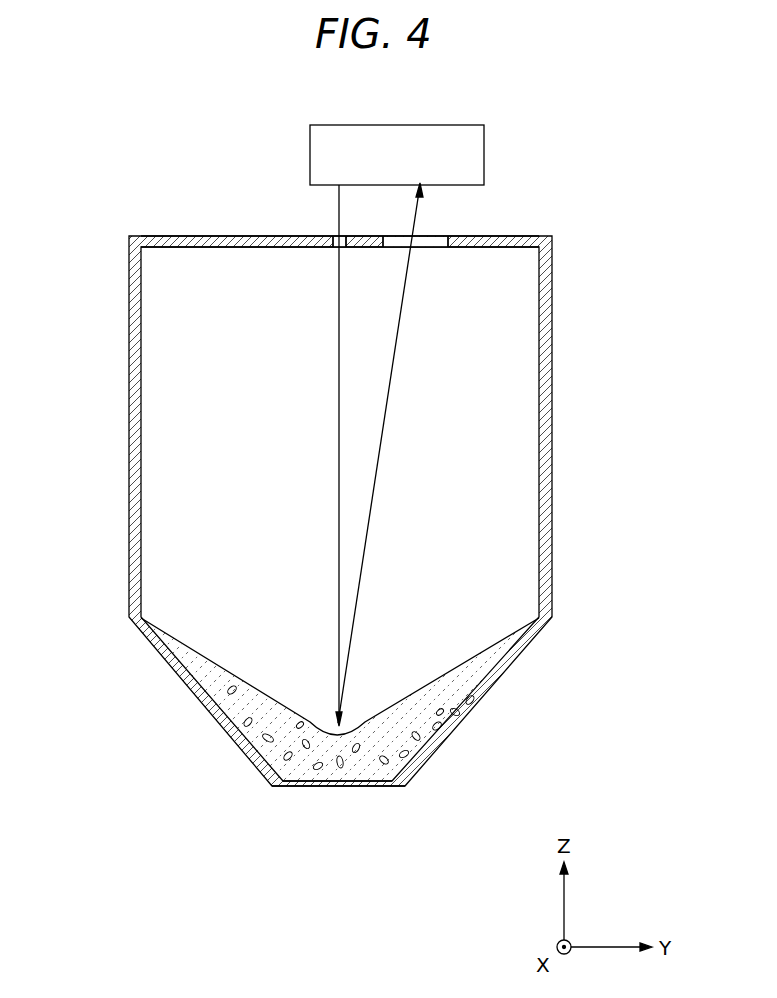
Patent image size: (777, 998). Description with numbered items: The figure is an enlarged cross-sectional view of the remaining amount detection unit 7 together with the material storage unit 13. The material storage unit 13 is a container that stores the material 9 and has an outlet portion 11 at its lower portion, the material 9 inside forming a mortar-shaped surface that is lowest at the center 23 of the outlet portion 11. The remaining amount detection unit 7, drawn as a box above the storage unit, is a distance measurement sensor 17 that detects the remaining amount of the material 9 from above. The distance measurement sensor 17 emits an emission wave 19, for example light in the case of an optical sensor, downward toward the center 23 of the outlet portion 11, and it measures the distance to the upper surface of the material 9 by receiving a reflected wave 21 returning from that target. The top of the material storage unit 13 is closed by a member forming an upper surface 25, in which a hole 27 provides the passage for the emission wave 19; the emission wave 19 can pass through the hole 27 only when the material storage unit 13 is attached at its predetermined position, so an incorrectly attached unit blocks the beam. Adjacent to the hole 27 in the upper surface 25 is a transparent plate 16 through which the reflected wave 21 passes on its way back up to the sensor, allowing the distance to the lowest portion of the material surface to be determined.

The remaining amount detection unit 7 is at (397, 125).
The distance measurement sensor 17 is at (389, 134).
The upper surface 25 is at (197, 236).
The hole 27 is at (333, 237).
The transparent plate 16 is at (435, 237).
The emission wave 19 is at (339, 375).
The reflected wave 21 is at (398, 333).
The material storage unit 13 is at (552, 497).
The material 9 is at (463, 700).
The center 23 is at (340, 786).
The outlet portion 11 is at (365, 786).